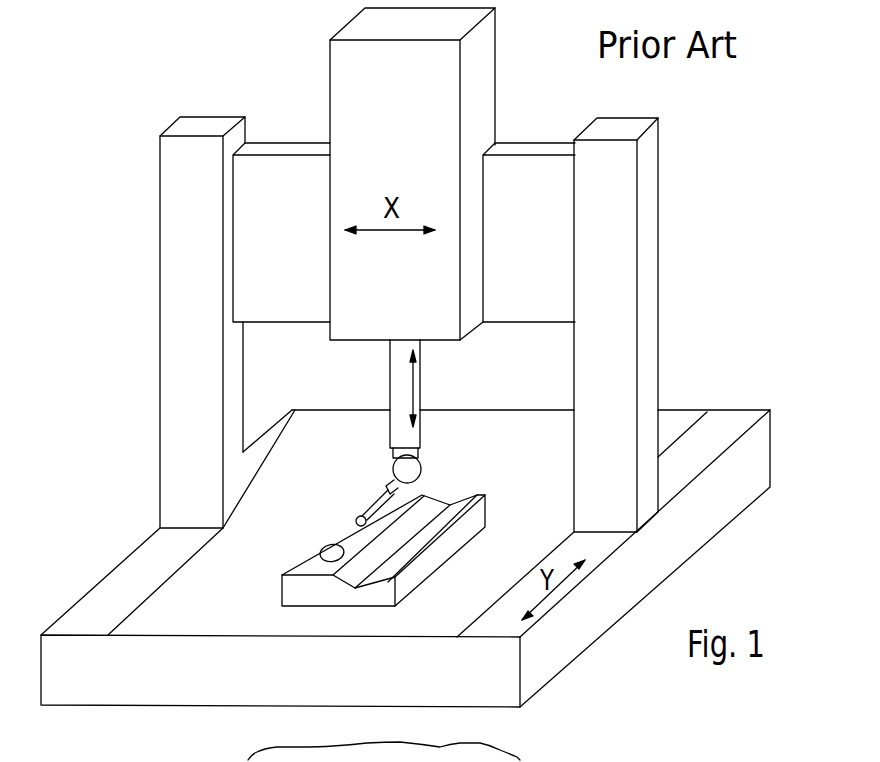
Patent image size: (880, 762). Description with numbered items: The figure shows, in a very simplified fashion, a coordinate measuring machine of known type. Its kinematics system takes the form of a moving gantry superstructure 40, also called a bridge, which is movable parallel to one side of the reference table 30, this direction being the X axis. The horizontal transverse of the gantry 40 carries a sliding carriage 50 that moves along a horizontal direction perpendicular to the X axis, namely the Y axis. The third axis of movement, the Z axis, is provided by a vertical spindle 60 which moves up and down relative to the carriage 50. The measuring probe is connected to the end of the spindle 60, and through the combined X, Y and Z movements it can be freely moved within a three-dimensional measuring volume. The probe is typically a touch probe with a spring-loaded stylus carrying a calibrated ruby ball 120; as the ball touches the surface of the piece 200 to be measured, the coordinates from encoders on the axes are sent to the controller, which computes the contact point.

The reference table 30 is at (125, 682).
The moving gantry superstructure 40 is at (178, 168).
The sliding carriage 50 is at (358, 102).
The vertical spindle 60 is at (398, 420).
The calibrated ruby ball 120 is at (357, 518).
The piece to be measured 200 is at (315, 565).